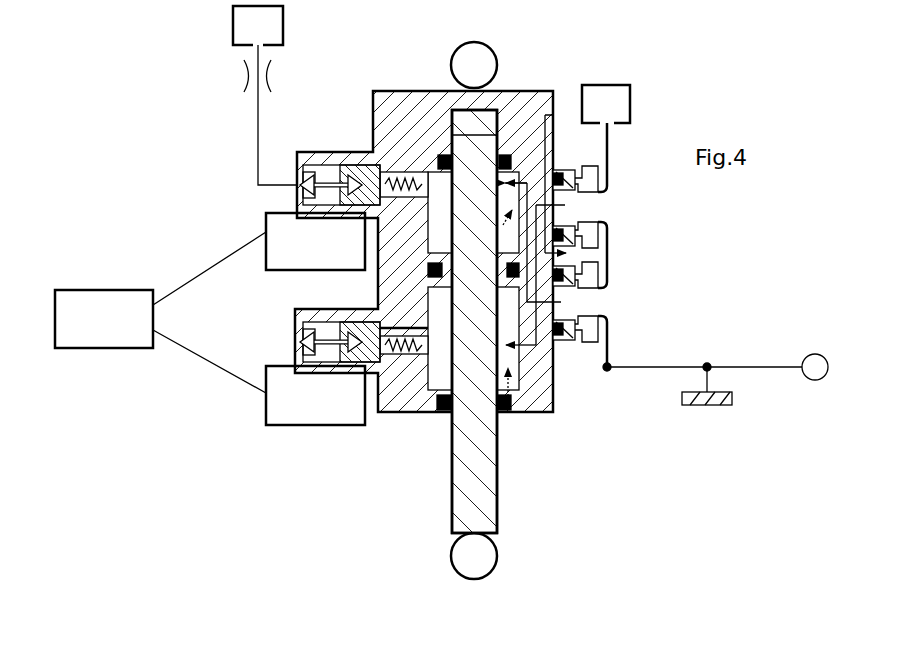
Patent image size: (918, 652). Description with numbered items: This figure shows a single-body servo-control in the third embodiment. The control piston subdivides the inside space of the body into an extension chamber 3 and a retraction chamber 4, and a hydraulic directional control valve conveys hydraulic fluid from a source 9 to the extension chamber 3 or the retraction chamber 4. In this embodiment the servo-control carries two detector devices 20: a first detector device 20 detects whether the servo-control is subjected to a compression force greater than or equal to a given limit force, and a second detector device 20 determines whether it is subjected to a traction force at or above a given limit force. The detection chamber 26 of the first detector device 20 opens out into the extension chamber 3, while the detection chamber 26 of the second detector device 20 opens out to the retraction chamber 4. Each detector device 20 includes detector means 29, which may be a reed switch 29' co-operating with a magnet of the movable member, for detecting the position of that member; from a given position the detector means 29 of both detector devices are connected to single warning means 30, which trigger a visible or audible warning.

The extension chamber 3 is at (572, 168).
The retraction chamber 4 is at (524, 413).
The source 9 is at (283, 22).
The detector device 20 is at (257, 192).
The detection chamber 26 is at (398, 173).
The detector means 29 is at (271, 328).
The reed switch 29' is at (313, 370).
The warning means 30 is at (100, 290).